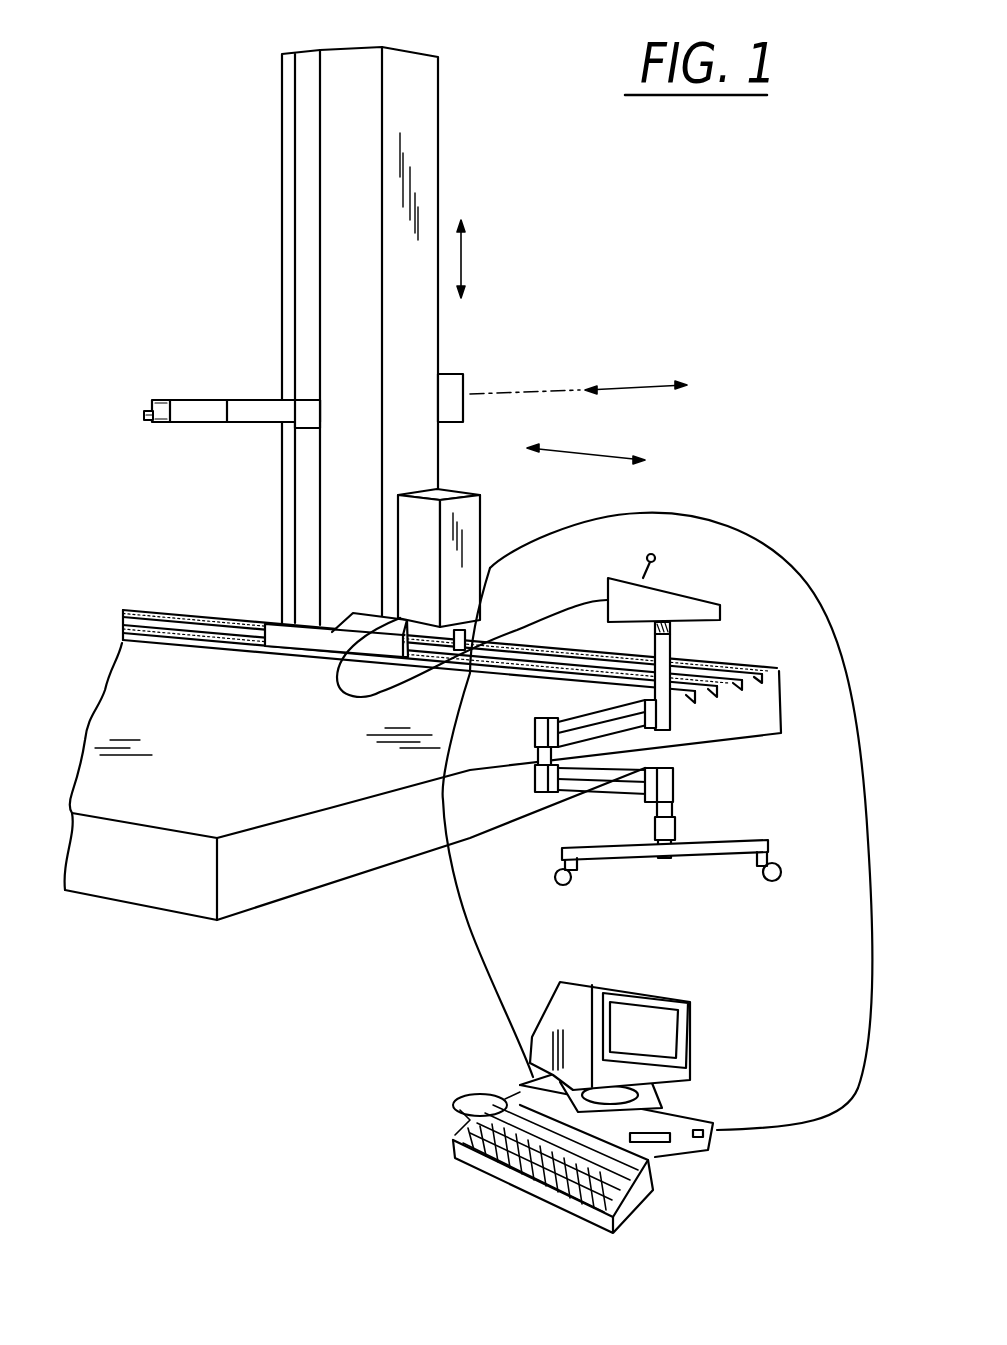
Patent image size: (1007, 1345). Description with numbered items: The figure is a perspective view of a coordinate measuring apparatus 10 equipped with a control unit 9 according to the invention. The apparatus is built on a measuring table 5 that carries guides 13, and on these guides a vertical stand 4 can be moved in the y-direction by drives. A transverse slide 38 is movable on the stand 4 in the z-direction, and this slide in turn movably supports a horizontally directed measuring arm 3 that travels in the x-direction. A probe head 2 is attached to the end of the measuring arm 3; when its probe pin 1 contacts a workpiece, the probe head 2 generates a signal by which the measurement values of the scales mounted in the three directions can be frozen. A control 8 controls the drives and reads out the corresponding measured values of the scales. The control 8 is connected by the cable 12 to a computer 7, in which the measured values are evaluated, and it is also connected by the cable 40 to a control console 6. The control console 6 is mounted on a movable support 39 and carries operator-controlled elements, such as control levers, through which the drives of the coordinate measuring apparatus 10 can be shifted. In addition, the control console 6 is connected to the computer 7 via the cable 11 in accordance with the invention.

The probe pin 1 is at (143, 415).
The probe head 2 is at (203, 415).
The measuring arm 3 is at (233, 392).
The vertical stand 4 is at (282, 157).
The measuring table 5 is at (203, 818).
The control console 6 is at (667, 592).
The computer 7 is at (690, 1042).
The control 8 is at (473, 527).
The control unit 9 is at (682, 789).
The coordinate measuring apparatus 10 is at (582, 291).
The cable 11 is at (462, 910).
The cable 12 is at (795, 575).
The guides 13 is at (750, 687).
The transverse slide 38 is at (305, 392).
The movable support 39 is at (535, 770).
The cable 40 is at (452, 572).